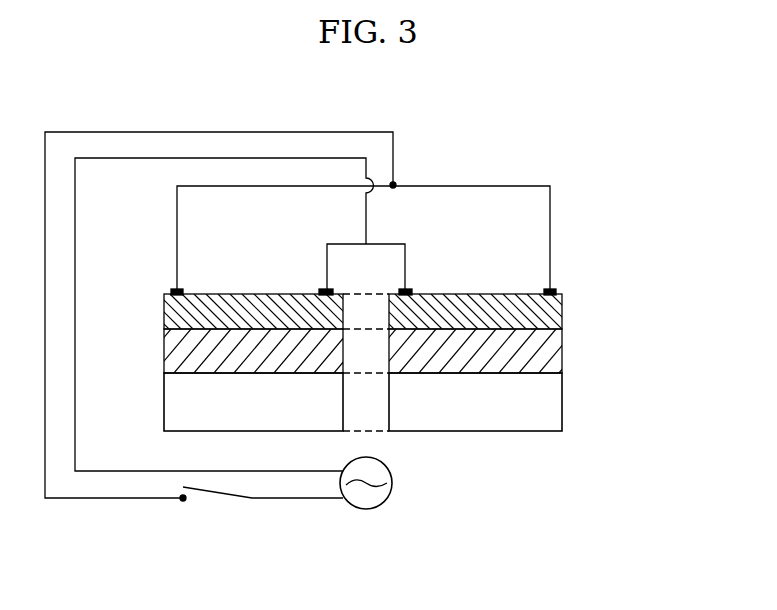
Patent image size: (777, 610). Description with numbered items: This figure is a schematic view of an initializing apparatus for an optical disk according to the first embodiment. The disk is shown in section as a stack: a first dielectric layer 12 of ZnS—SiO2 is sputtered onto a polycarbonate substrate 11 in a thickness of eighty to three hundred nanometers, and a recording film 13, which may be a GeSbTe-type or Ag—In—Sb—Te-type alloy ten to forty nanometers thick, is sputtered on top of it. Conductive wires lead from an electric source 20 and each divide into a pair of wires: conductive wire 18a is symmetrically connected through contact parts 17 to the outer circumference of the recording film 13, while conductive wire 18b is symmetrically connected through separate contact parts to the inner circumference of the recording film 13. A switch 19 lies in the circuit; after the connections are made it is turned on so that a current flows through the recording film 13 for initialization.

The polycarbonate substrate 11 is at (555, 408).
The first dielectric layer 12 is at (555, 358).
The recording film 13 is at (560, 322).
The contact parts 17 is at (553, 290).
The conductive wire 18a is at (518, 186).
The conductive wire 18b is at (392, 244).
The switch 19 is at (223, 493).
The electric source 20 is at (388, 487).